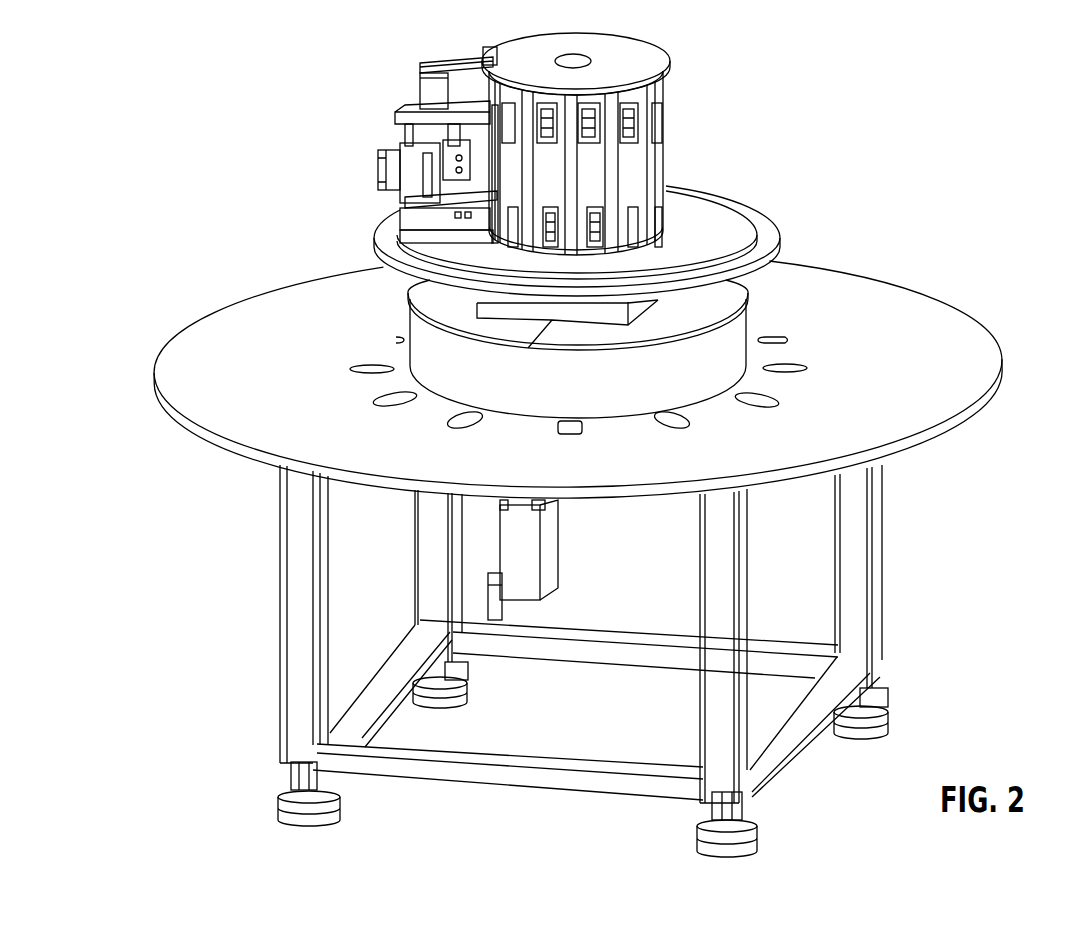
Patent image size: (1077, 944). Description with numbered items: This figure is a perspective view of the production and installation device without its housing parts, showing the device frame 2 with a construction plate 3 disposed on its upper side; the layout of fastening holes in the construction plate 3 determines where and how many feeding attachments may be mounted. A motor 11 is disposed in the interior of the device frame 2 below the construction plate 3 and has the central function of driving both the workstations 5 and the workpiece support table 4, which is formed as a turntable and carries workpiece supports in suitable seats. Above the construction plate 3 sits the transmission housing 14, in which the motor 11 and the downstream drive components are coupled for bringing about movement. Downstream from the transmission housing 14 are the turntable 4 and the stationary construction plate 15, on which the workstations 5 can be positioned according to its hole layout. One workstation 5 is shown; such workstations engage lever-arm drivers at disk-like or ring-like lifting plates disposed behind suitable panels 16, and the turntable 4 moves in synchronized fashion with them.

The device frame 2 is at (496, 777).
The construction plate 3 is at (970, 348).
The workpiece support table 4 is at (770, 223).
The workstation 5 is at (407, 95).
The motor 11 is at (532, 562).
The transmission housing 14 is at (738, 330).
The stationary construction plate 15 is at (718, 207).
The panels 16 is at (640, 148).